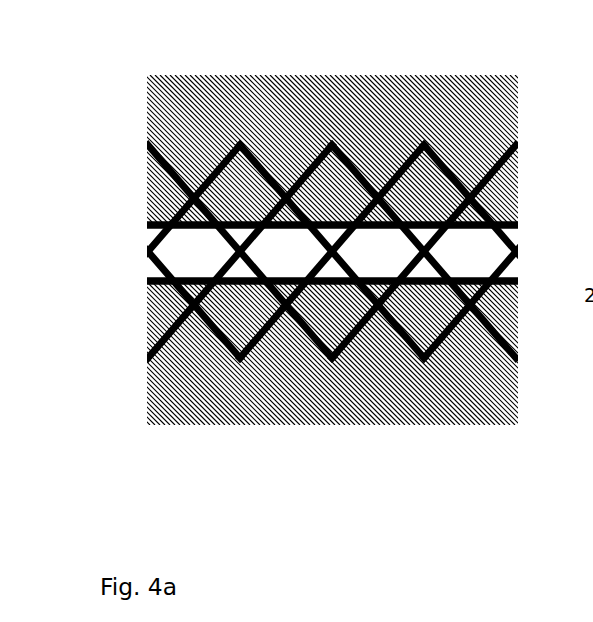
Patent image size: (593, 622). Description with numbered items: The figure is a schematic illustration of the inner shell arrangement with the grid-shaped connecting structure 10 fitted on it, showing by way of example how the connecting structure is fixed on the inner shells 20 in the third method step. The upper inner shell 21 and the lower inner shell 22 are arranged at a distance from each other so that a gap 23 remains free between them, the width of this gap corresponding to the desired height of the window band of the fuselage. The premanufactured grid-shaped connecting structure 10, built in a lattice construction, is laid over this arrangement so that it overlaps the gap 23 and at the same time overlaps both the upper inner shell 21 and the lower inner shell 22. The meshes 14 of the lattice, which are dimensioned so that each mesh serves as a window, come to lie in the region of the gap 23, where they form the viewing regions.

The grid-shaped connecting structure 10 is at (187, 192).
The mesh 14 is at (203, 258).
The inner shells 20 is at (296, 287).
The upper inner shell 21 is at (163, 110).
The lower inner shell 22 is at (180, 395).
The gap 23 is at (117, 225).